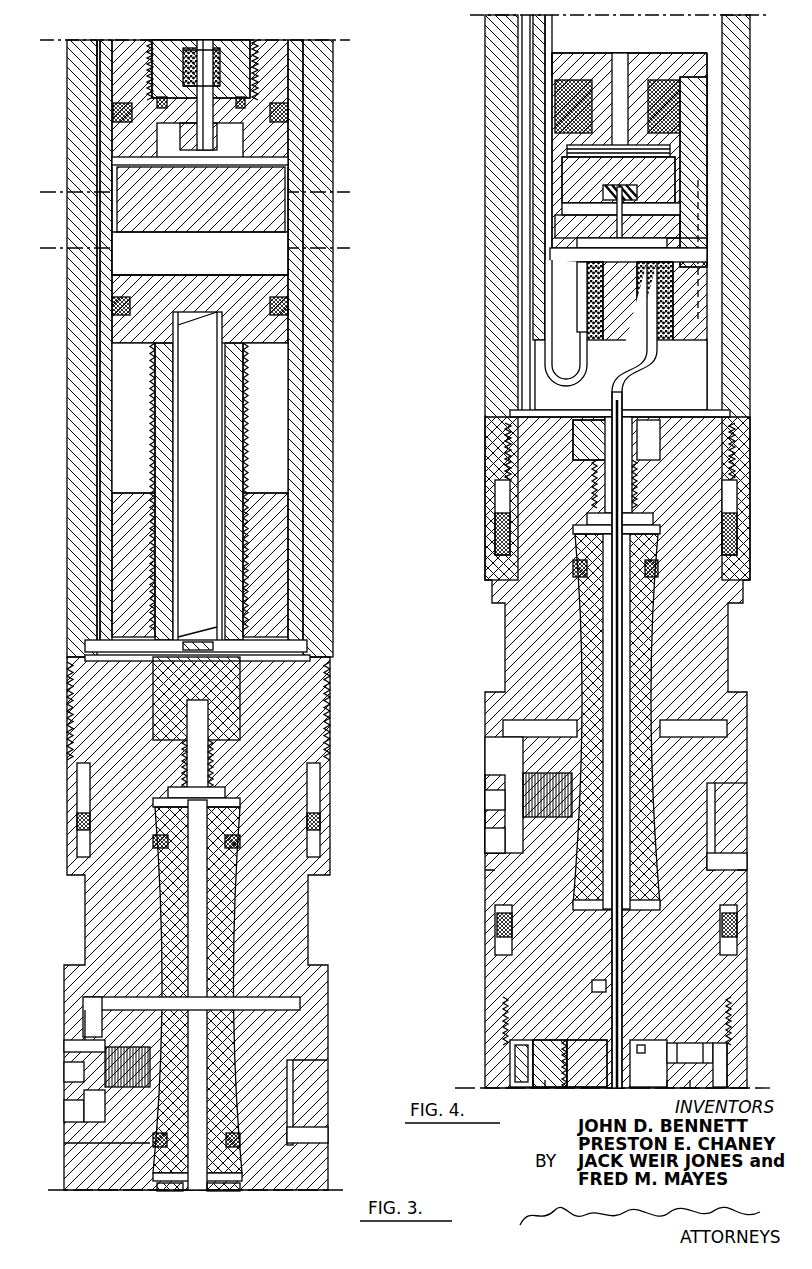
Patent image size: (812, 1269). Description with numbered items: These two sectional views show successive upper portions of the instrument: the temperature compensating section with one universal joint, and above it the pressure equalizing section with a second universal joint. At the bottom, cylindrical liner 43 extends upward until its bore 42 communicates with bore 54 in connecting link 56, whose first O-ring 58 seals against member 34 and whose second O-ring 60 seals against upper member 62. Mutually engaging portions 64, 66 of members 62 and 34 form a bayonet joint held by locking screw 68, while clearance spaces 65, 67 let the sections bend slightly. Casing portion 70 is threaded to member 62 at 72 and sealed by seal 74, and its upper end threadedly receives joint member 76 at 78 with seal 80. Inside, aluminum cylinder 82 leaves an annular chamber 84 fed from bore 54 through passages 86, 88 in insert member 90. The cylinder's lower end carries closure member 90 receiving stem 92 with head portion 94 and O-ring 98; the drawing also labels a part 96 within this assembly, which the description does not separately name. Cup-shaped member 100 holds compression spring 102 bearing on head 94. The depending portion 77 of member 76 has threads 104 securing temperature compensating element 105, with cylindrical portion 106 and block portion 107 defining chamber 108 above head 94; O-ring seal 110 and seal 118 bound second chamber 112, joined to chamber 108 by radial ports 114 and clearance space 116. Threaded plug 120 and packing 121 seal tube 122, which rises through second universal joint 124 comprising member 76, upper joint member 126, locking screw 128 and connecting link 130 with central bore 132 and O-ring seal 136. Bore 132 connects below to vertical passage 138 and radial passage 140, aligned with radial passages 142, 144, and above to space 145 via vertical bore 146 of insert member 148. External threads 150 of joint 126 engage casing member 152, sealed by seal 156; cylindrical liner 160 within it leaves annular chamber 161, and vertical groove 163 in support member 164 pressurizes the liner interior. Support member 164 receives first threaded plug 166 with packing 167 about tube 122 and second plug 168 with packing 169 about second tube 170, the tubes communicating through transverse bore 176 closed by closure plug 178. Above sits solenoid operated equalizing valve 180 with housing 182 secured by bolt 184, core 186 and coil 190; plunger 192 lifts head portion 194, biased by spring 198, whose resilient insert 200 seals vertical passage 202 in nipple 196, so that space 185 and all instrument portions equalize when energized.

In FIG. 3, the member 34 is at (118, 1170).
In FIG. 3, the bore 42 is at (185, 1193).
In FIG. 3, the cylindrical liner 43 is at (218, 1193).
In FIG. 3, the bore 54 is at (187, 917).
In FIG. 3, the connecting link 56 is at (172, 937).
In FIG. 3, the first O-ring 58 is at (153, 1140).
In FIG. 3, the second O-ring 60 is at (153, 840).
In FIG. 3, the upper member 62 is at (142, 788).
In FIG. 3, the engaging portion 64 is at (315, 1082).
In FIG. 3, the clearance space 65 is at (312, 1137).
In FIG. 3, the engaging portion 66 is at (295, 1033).
In FIG. 3, the clearance space 67 is at (295, 1003).
In FIG. 3, the locking screw 68 is at (100, 1047).
In FIG. 3, the casing portion 70 is at (68, 508).
In FIG. 3, the threaded connection 72 is at (88, 695).
In FIG. 3, the seal 74 is at (78, 800).
In FIG. 4, the joint member 76 is at (570, 962).
In FIG. 3, the central depending portion 77 is at (178, 67).
In FIG. 4, the central depending portion 77 is at (600, 1082).
In FIG. 4, the threaded connection 78 is at (503, 1010).
In FIG. 4, the seal 80 is at (500, 928).
In FIG. 3, the aluminum cylinder 82 is at (78, 404).
In FIG. 4, the aluminum cylinder 82 is at (723, 1073).
In FIG. 3, the annular chamber 84 is at (99, 438).
In FIG. 4, the annular chamber 84 is at (713, 1063).
In FIG. 3, the passage 86 is at (205, 718).
In FIG. 3, the passage 88 is at (225, 667).
In FIG. 3, the insert member 90 is at (120, 548).
In FIG. 3, the stem 92 is at (158, 373).
In FIG. 3, the head portion 94 is at (122, 328).
In FIG. 3, the support block 96 is at (156, 490).
In FIG. 3, the O-ring 98 is at (113, 305).
In FIG. 3, the cup-shaped member 100 is at (85, 648).
In FIG. 3, the compression spring 102 is at (199, 318).
In FIG. 3, the threads 104 is at (142, 45).
In FIG. 4, the threads 104 is at (578, 1040).
In FIG. 3, the temperature compensating element 105 is at (111, 84).
In FIG. 4, the temperature compensating element 105 is at (520, 1057).
In FIG. 3, the upper cylindrical portion 106 is at (143, 73).
In FIG. 4, the upper cylindrical portion 106 is at (545, 1088).
In FIG. 3, the lower block portion 107 is at (222, 223).
In FIG. 3, the chamber 108 is at (222, 270).
In FIG. 3, the O-ring seal 110 is at (157, 100).
In FIG. 3, the second chamber 112 is at (188, 157).
In FIG. 3, the radial ports 114 is at (115, 160).
In FIG. 3, the clearance space 116 is at (117, 214).
In FIG. 3, the seal 118 is at (113, 113).
In FIG. 3, the threaded plug 120 is at (218, 97).
In FIG. 3, the packing 121 is at (254, 62).
In FIG. 4, the tube 122 is at (647, 382).
In FIG. 4, the second universal joint 124 is at (498, 667).
In FIG. 4, the upper joint member 126 is at (557, 655).
In FIG. 4, the locking screw 128 is at (495, 812).
In FIG. 4, the connecting link 130 is at (585, 612).
In FIG. 4, the central bore 132 is at (627, 688).
In FIG. 4, the O-ring seal 136 is at (573, 568).
In FIG. 4, the vertical passage 138 is at (608, 983).
In FIG. 4, the radial passage 140 is at (648, 1047).
In FIG. 4, the radial passage 142 is at (673, 1088).
In FIG. 4, the radial passage 144 is at (670, 1050).
In FIG. 4, the space 145 is at (614, 393).
In FIG. 4, the vertical bore 146 is at (608, 482).
In FIG. 4, the insert member 148 is at (580, 433).
In FIG. 4, the external threads 150 is at (510, 455).
In FIG. 4, the casing member 152 is at (492, 367).
In FIG. 4, the seal 156 is at (502, 528).
In FIG. 4, the cylindrical liner 160 is at (567, 295).
In FIG. 4, the annular chamber 161 is at (518, 58).
In FIG. 4, the vertical groove 163 is at (535, 268).
In FIG. 4, the support member 164 is at (637, 273).
In FIG. 4, the first threaded plug 166 is at (655, 355).
In FIG. 4, the packing 167 is at (673, 285).
In FIG. 4, the second plug 168 is at (563, 357).
In FIG. 4, the packing 169 is at (582, 323).
In FIG. 4, the second tube 170 is at (540, 33).
In FIG. 4, the transverse bore 176 is at (577, 243).
In FIG. 4, the closure plug 178 is at (700, 238).
In FIG. 4, the solenoid operated equalizing valve 180 is at (658, 45).
In FIG. 4, the housing 182 is at (700, 128).
In FIG. 4, the bolt 184 is at (700, 262).
In FIG. 4, the space 185 is at (572, 208).
In FIG. 4, the core 186 is at (572, 58).
In FIG. 4, the coil 190 is at (560, 100).
In FIG. 4, the plunger 192 is at (620, 55).
In FIG. 4, the head portion 194 is at (657, 182).
In FIG. 4, the nipple 196 is at (660, 207).
In FIG. 4, the spring 198 is at (575, 150).
In FIG. 4, the resilient insert 200 is at (605, 192).
In FIG. 4, the vertical passage 202 is at (612, 224).